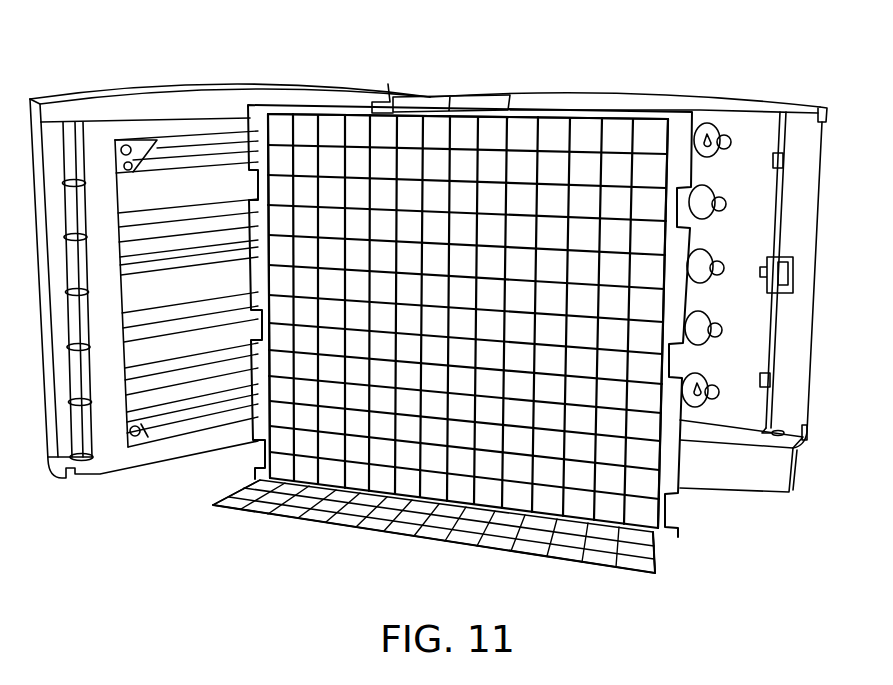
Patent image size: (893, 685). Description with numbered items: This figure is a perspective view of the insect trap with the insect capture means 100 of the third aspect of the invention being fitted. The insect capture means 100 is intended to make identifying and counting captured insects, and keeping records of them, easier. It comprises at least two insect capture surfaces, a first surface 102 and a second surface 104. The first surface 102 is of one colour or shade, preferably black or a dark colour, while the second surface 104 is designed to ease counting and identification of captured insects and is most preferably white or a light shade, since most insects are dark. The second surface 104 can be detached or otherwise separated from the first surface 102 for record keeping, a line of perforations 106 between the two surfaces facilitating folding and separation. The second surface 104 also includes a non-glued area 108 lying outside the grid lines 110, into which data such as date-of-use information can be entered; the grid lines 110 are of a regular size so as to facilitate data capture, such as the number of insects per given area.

The insect capture means 100 is at (450, 323).
The first insect capture surface 102 is at (650, 231).
The second insect capture surface 104 is at (668, 556).
The line of perforations 106 is at (359, 497).
The non-glued area 108 is at (655, 575).
The grid lines 110 is at (457, 549).